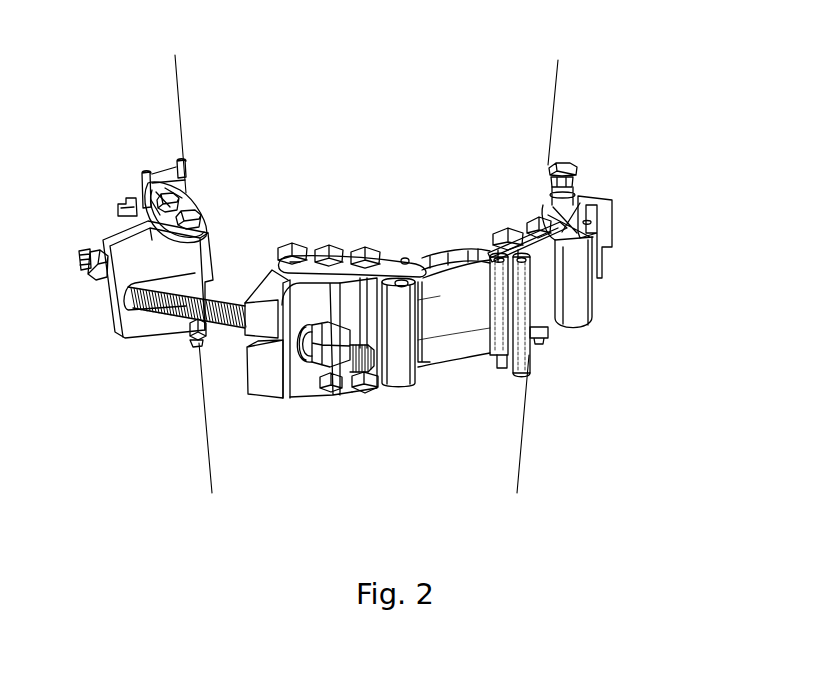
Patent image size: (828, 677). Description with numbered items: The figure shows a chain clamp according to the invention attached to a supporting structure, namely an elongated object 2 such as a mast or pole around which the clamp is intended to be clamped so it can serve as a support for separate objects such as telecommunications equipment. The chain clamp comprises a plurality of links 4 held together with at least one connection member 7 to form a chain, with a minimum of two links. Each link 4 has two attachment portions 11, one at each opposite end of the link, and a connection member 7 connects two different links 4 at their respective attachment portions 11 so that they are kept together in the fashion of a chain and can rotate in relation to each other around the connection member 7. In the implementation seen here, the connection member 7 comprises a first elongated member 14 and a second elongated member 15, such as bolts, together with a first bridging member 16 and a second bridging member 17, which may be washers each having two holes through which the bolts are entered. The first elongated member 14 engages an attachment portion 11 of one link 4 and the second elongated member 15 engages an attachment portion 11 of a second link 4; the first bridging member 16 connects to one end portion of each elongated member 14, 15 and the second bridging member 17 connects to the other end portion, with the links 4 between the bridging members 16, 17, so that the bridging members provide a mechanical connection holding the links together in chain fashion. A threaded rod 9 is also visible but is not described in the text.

The elongated object 2 is at (177, 102).
The link 4 is at (600, 222).
The connection member 7 is at (543, 362).
The threaded rod 9 is at (187, 307).
The attachment portion 11 is at (488, 254).
The first elongated member 14 is at (500, 231).
The second elongated member 15 is at (540, 217).
The first bridging member 16 is at (528, 224).
The second bridging member 17 is at (543, 332).